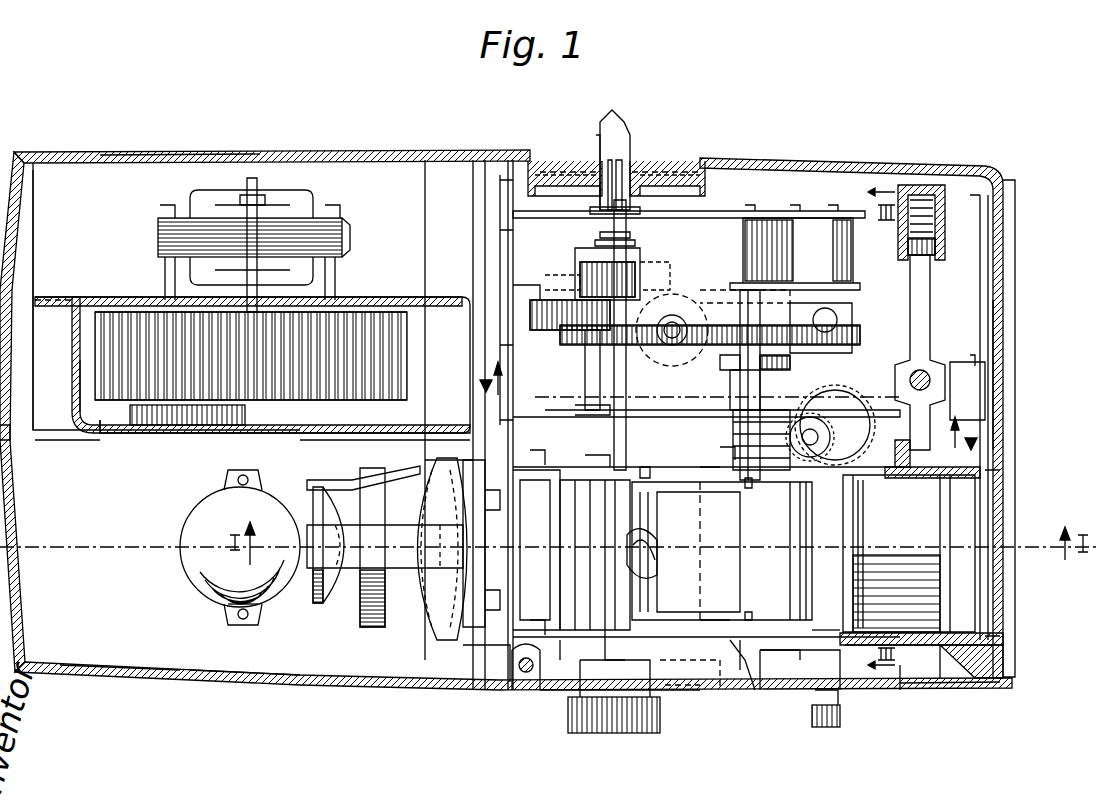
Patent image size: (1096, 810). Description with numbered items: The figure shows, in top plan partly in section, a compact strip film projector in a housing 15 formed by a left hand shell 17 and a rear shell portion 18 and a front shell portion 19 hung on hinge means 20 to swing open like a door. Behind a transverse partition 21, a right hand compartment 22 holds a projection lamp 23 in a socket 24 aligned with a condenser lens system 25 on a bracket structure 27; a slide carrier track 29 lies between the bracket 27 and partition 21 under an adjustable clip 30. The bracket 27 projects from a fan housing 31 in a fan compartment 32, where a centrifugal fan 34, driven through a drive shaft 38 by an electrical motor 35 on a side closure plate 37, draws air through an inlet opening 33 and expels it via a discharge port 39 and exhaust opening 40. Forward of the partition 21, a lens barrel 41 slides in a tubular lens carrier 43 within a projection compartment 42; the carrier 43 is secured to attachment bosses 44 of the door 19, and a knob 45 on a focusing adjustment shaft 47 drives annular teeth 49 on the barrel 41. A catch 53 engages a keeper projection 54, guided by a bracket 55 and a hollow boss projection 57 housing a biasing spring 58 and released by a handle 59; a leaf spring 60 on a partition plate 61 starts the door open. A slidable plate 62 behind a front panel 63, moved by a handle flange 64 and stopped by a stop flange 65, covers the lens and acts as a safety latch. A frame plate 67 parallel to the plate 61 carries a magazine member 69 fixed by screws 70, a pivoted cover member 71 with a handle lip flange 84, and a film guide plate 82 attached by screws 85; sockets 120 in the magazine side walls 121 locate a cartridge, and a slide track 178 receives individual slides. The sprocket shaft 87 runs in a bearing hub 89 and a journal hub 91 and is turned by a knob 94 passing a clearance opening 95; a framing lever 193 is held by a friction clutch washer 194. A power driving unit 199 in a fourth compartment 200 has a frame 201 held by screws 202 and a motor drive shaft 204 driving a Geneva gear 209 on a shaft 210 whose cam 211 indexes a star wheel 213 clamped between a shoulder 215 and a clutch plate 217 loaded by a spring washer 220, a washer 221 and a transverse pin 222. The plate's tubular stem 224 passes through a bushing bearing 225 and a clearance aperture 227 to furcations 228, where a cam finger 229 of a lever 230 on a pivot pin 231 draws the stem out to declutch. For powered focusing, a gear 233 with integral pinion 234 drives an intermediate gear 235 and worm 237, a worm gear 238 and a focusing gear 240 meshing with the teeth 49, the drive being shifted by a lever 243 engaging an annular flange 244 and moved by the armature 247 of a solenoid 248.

The housing 15 is at (287, 145).
The left hand longitudinal shell 17 is at (165, 152).
The rear right shell portion 18 is at (160, 675).
The front right shell portion 19 is at (955, 690).
The hinge means 20 is at (523, 672).
The vertical transverse partition 21 is at (487, 265).
The right hand compartment 22 is at (227, 662).
The projection lamp 23 is at (205, 573).
The mounting socket 24 is at (228, 614).
The condenser lens system 25 is at (321, 613).
The lens bracket 27 is at (365, 452).
The carrier slideway 29 is at (490, 660).
The vertically adjustable clip 30 is at (497, 620).
The cooling fan housing 31 is at (110, 425).
The cooling fan compartment 32 is at (117, 183).
The ventilation inlet opening 33 is at (205, 418).
The centrifugal fan 34 is at (400, 400).
The electrical motor 35 is at (348, 222).
The side closure plate 37 is at (372, 297).
The drive shaft 38 is at (265, 185).
The discharge port 39 is at (57, 398).
The exhaust opening 40 is at (17, 408).
The lens barrel 41 is at (918, 514).
The projection compartment 42 is at (950, 660).
The lens carrier 43 is at (930, 650).
The attachment bosses 44 is at (733, 665).
The focusing knob 45 is at (815, 722).
The focusing adjustment shaft 47 is at (830, 692).
The annular teeth 49 is at (862, 548).
The catch 53 is at (928, 293).
The keeper projection 54 is at (912, 475).
The bracket 55 is at (960, 405).
The hollow boss projection 57 is at (938, 245).
The biasing spring 58 is at (940, 218).
The handle 59 is at (910, 380).
The leaf spring 60 is at (905, 455).
The partition plate 61 is at (645, 467).
The lens cover and safety latch plate 62 is at (990, 520).
The front panel 63 is at (1003, 382).
The handle flange 64 is at (1000, 636).
The stop flange 65 is at (980, 360).
The frame plate 67 is at (575, 640).
The magazine member 69 is at (790, 628).
The screws 70 is at (775, 643).
The cover member 71 is at (748, 546).
The film guide plate 82 is at (600, 515).
The handle lip flange 84 is at (642, 545).
The screws 85 is at (548, 645).
The sprocket shaft 87 is at (608, 440).
The bearing hub 89 is at (622, 610).
The journal hub 91 is at (596, 460).
The knob 94 is at (612, 720).
The clearance opening 95 is at (570, 690).
The sockets 120 is at (752, 612).
The side walls 121 is at (722, 610).
The slide track 178 is at (520, 500).
The framing lever 193 is at (695, 680).
The friction clutch washer 194 is at (606, 650).
The power driving unit 199 is at (727, 201).
The fourth compartment 200 is at (815, 185).
The frame 201 is at (805, 218).
The screws 202 is at (498, 195).
The drive shaft 204 is at (690, 330).
The Geneva gear 209 is at (575, 325).
The shaft 210 is at (588, 380).
The cam 211 is at (555, 280).
The star wheel 213 is at (575, 258).
The shoulder 215 is at (520, 290).
The clutch plate 217 is at (628, 238).
The spring washer 220 is at (585, 262).
The washer 221 is at (595, 243).
The transverse pin 222 is at (600, 234).
The tubular stem 224 is at (650, 190).
The bushing bearing 225 is at (590, 210).
The clearance aperture 227 is at (592, 188).
The furcations 228 is at (625, 180).
The cam finger 229 is at (620, 165).
The lever 230 is at (630, 130).
The pivot pin 231 is at (598, 140).
The gear 233 is at (790, 350).
The pinion 234 is at (728, 380).
The intermediate gear 235 is at (792, 362).
The worm 237 is at (735, 440).
The worm gear 238 is at (812, 415).
The focusing gear 240 is at (840, 410).
The shifting lever 243 is at (700, 290).
The annular horizontal flange 244 is at (688, 340).
The armature 247 is at (830, 320).
The solenoid 248 is at (845, 335).